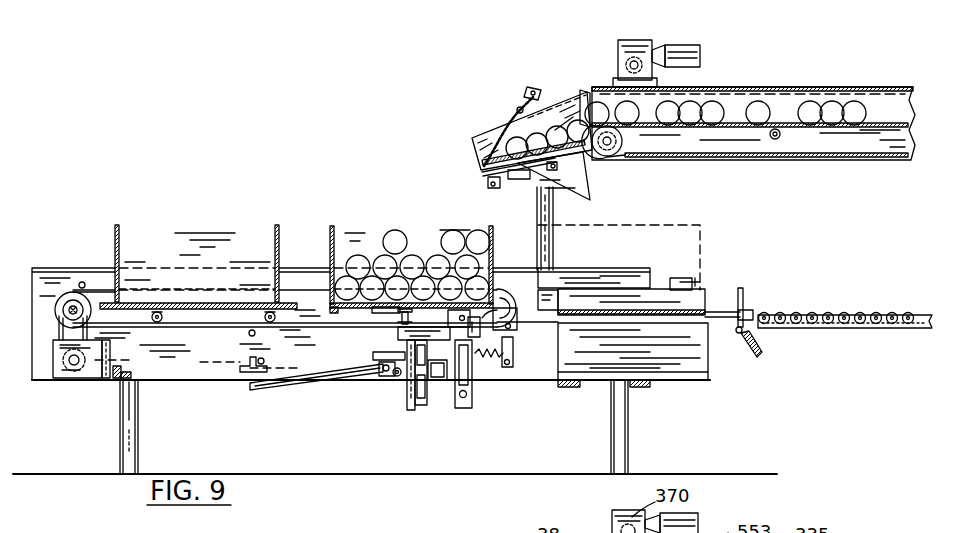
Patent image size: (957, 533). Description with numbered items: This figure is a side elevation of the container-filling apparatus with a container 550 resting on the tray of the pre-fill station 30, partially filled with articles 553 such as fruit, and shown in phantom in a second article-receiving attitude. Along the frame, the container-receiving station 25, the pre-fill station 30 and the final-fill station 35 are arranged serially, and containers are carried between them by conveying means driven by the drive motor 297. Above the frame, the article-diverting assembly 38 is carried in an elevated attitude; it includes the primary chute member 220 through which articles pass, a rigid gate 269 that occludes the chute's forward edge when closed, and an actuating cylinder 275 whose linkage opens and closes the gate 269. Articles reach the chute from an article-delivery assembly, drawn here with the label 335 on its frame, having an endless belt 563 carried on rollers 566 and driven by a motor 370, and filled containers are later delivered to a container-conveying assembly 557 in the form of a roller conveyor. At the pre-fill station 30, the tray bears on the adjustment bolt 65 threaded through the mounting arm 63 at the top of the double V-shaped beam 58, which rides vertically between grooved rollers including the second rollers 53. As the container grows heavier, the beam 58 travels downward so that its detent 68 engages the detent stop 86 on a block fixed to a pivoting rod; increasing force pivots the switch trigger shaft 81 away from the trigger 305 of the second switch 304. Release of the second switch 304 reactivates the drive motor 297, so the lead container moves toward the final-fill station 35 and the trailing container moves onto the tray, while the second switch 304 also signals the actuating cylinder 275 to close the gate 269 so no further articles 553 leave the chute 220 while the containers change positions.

The container-receiving station 25 is at (108, 300).
The drive motor 297 is at (86, 372).
The container 550 is at (277, 242).
The articles 553 is at (396, 242).
The second switch 304 is at (260, 362).
The trigger 305 is at (252, 358).
The container pre-fill station 30 is at (333, 312).
The adjustment bolt 65 is at (386, 313).
The mounting arm 63 is at (398, 333).
The detent 68 is at (378, 358).
The detent stop 86 is at (384, 378).
The switch trigger shaft 81 is at (283, 387).
The double V-shaped beam 58 is at (412, 406).
The second rollers 53 is at (428, 402).
The final-fill station 35 is at (690, 307).
The container-conveying assembly 557 is at (806, 316).
The article-diverting assembly 38 is at (560, 96).
The primary chute member 220 is at (490, 135).
The gate 269 is at (510, 131).
The actuating cylinder 275 is at (624, 120).
The motor 370 is at (623, 47).
The feed conveyor 335 is at (797, 99).
The endless belt 563 is at (870, 122).
The rollers 566 is at (782, 137).